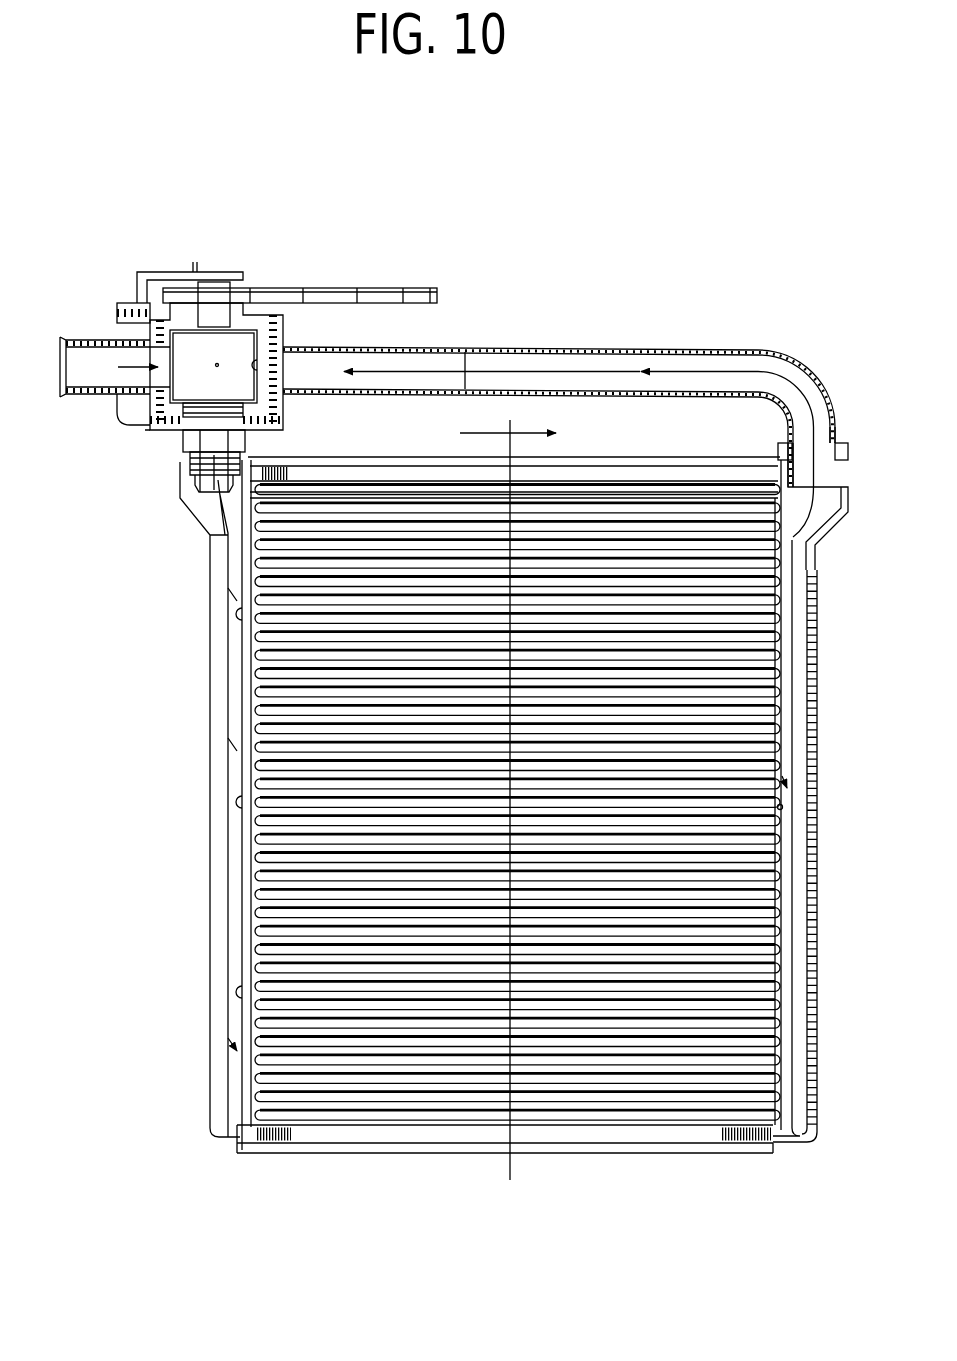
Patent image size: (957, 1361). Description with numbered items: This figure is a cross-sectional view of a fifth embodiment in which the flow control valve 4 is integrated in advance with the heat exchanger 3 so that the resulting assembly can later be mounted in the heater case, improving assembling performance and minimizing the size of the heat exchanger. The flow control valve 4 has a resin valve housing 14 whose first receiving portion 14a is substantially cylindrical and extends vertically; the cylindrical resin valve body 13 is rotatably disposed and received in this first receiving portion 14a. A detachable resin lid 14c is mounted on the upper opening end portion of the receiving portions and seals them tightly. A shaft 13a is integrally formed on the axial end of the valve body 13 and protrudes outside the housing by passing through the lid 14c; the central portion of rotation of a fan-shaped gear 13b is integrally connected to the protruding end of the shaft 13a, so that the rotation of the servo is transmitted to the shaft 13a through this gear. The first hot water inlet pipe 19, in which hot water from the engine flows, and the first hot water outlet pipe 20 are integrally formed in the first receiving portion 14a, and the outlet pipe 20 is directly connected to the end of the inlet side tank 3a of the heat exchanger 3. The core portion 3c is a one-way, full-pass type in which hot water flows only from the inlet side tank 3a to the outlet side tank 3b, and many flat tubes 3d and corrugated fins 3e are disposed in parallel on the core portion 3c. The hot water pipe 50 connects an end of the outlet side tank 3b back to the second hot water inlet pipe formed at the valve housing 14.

The heat exchanger 3 is at (204, 737).
The inlet side tank 3a is at (210, 875).
The outlet side tank 3b is at (815, 878).
The core portion 3c is at (745, 753).
The flat tubes 3d is at (617, 1130).
The corrugated fins 3e is at (732, 1143).
The flow control valve 4 is at (176, 261).
The valve body 13 is at (75, 337).
The shaft 13a is at (210, 310).
The fan-shaped gear 13b is at (413, 287).
The valve housing 14 is at (168, 337).
The first receiving portion 14a is at (153, 420).
The lid 14c is at (160, 318).
The first hot water inlet pipe 19 is at (117, 338).
The first hot water outlet pipe 20 is at (177, 437).
The hot water pipe 50 is at (622, 346).